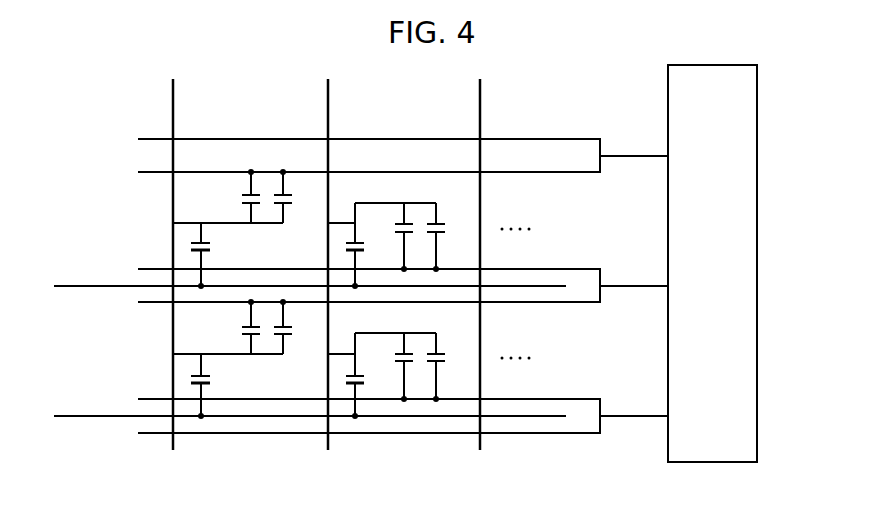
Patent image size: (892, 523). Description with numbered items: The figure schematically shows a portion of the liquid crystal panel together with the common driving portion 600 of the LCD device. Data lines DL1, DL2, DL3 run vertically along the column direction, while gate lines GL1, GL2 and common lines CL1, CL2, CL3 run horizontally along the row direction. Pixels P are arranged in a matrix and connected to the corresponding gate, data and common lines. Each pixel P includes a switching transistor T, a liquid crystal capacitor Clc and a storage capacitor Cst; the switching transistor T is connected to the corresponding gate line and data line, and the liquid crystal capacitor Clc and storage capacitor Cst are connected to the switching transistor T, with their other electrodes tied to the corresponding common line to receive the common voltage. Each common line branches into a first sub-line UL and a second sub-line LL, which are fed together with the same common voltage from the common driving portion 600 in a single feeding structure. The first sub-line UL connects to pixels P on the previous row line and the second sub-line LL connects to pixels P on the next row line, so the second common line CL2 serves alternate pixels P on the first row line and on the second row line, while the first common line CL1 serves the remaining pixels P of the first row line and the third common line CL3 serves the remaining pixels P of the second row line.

The common driving portion 600 is at (767, 242).
The first sub-line UL is at (545, 134).
The second sub-line LL is at (571, 182).
The pixel P is at (190, 196).
The switching transistor T is at (294, 316).
The liquid crystal capacitor Clc is at (306, 278).
The storage capacitor Cst is at (385, 278).
The first data line DL1 is at (177, 253).
The second data line DL2 is at (330, 253).
The third data line DL3 is at (484, 253).
The first gate line GL1 is at (294, 286).
The second gate line GL2 is at (294, 416).
The first common line CL1 is at (403, 153).
The second common line CL2 is at (403, 284).
The third common line CL3 is at (403, 414).